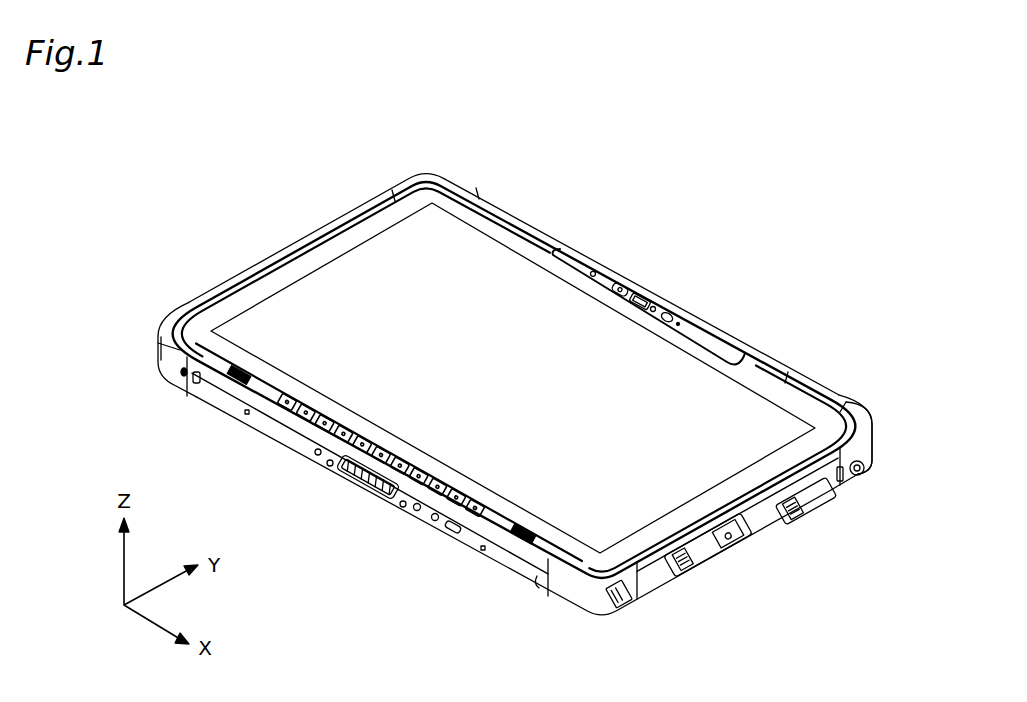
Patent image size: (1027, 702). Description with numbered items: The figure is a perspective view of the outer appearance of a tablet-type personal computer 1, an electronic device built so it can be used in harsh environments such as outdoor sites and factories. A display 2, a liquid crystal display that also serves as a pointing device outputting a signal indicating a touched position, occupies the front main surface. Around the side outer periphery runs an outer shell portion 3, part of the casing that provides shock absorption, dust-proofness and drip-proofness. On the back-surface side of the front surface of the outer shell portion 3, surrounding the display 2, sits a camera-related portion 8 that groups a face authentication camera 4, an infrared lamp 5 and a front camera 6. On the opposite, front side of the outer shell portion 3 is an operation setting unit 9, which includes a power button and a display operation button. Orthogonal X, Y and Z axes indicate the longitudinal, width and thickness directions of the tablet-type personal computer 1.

The tablet-type personal computer 1 is at (722, 176).
The display 2 is at (474, 256).
The outer shell portion 3 is at (864, 428).
The face authentication camera 4 is at (620, 283).
The infrared (IR) lamp 5 is at (644, 295).
The front camera 6 is at (665, 300).
The camera-related portion 8 is at (610, 207).
The operation setting unit 9 is at (291, 377).